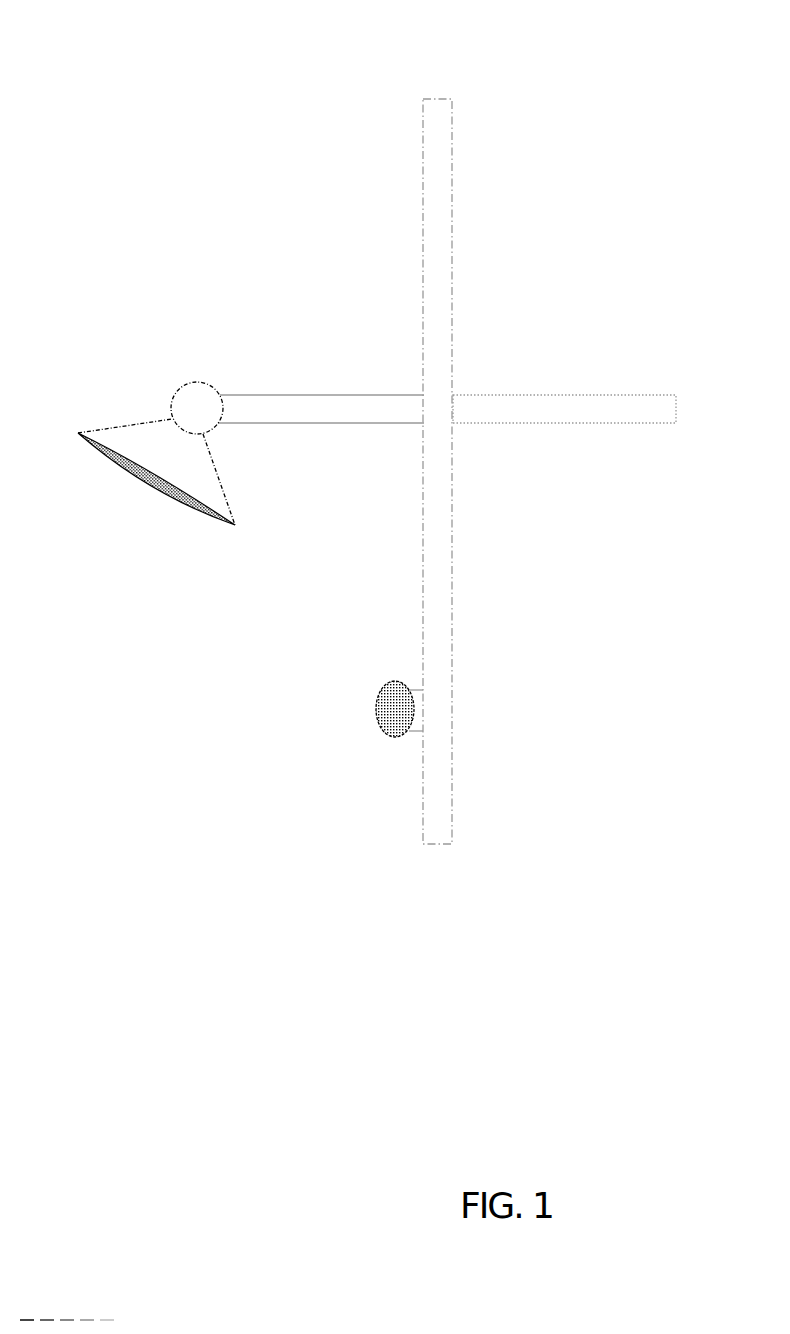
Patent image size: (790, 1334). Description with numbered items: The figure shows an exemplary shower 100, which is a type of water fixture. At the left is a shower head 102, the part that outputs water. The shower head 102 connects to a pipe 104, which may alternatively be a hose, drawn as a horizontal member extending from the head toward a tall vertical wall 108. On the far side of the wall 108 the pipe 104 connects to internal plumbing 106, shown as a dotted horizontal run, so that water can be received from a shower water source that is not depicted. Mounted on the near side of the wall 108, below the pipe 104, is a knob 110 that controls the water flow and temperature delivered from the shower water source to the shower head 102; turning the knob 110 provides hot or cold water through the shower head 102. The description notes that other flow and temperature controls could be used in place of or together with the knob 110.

The shower 100 is at (103, 785).
The shower head 102 is at (78, 433).
The pipe 104 is at (292, 372).
The internal plumbing 106 is at (639, 372).
The wall 108 is at (447, 98).
The knob 110 is at (390, 680).